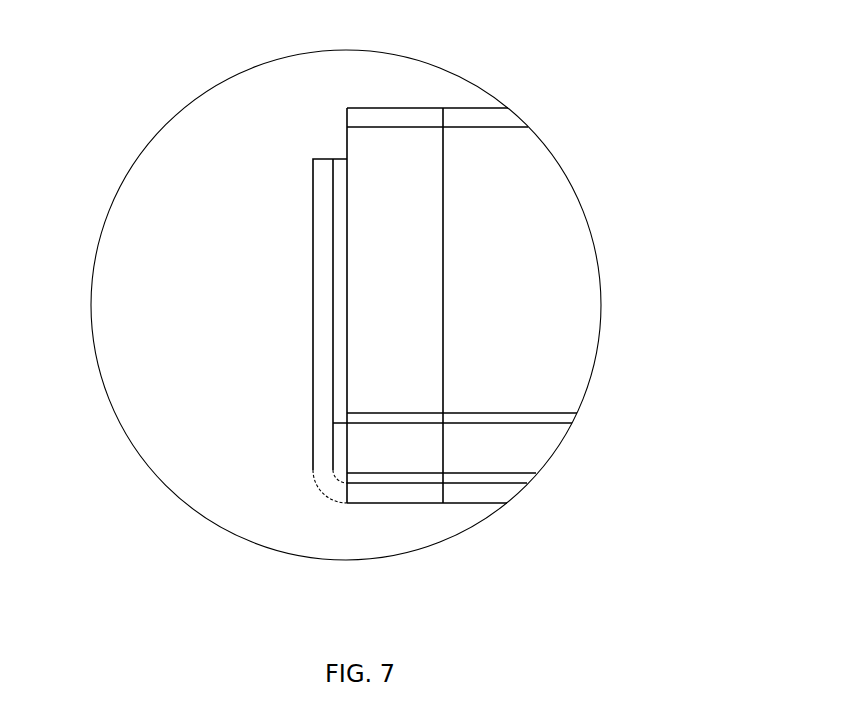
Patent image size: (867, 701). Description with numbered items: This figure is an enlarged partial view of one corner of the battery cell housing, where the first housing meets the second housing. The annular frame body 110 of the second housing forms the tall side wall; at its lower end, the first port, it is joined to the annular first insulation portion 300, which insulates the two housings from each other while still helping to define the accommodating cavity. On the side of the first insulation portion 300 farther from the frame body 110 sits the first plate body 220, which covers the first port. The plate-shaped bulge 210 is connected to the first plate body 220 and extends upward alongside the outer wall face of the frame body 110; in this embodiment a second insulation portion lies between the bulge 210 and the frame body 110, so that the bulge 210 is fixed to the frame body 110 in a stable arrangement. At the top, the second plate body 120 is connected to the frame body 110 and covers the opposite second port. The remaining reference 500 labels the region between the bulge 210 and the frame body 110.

The frame body 110 is at (560, 302).
The second plate body 120 is at (470, 115).
The bulge 210 is at (317, 315).
The first plate body 220 is at (472, 493).
The first insulation portion 300 is at (532, 445).
The gap 500 is at (338, 207).